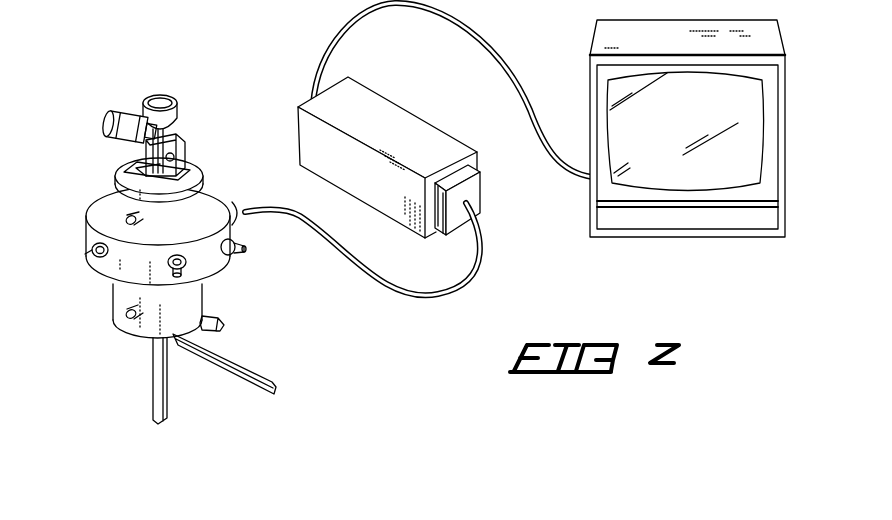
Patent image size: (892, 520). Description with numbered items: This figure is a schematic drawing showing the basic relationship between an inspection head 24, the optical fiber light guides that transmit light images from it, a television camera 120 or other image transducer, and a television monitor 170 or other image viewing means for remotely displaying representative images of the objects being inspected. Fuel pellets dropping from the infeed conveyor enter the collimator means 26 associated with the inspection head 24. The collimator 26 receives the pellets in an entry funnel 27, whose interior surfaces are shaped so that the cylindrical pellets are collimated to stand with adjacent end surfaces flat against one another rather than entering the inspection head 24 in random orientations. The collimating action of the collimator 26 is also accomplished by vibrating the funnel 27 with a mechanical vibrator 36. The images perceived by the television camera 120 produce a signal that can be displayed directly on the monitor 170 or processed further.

The inspection head 24 is at (70, 215).
The collimator means 26 is at (246, 108).
The entry funnel 27 is at (163, 100).
The mechanical vibrator 36 is at (119, 104).
The television camera 120 is at (445, 120).
The monitor 170 is at (688, 220).